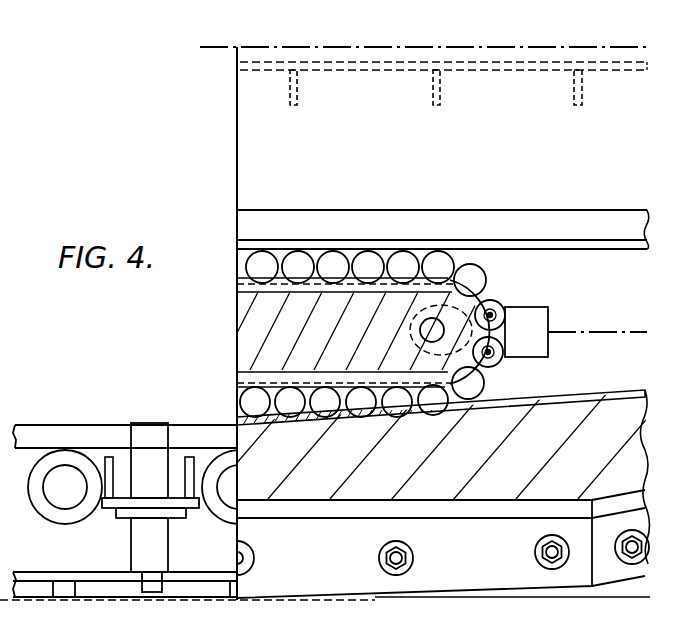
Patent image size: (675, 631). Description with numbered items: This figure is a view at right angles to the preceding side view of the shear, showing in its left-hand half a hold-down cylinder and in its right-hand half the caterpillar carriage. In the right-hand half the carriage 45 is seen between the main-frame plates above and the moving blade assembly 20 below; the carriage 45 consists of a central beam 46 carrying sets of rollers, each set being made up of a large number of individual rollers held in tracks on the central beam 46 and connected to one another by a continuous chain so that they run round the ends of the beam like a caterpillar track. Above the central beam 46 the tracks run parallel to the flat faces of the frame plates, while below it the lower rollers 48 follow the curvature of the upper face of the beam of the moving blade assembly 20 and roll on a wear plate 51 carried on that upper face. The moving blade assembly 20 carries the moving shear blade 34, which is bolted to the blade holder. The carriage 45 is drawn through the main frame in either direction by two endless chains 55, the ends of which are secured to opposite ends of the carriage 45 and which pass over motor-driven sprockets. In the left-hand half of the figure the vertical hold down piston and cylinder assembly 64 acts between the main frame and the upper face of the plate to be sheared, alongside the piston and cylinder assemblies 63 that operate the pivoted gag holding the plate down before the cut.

The moving blade assembly 20 is at (470, 465).
The moving shear blade 34 is at (332, 565).
The carriage 45 is at (287, 323).
The central beam 46 is at (463, 320).
The rollers 48 is at (470, 384).
The wear plate 51 is at (642, 392).
The endless chains 55 is at (465, 46).
The piston and cylinder assemblies 63 is at (52, 510).
The vertical hold down piston and cylinder assembly 64 is at (142, 550).